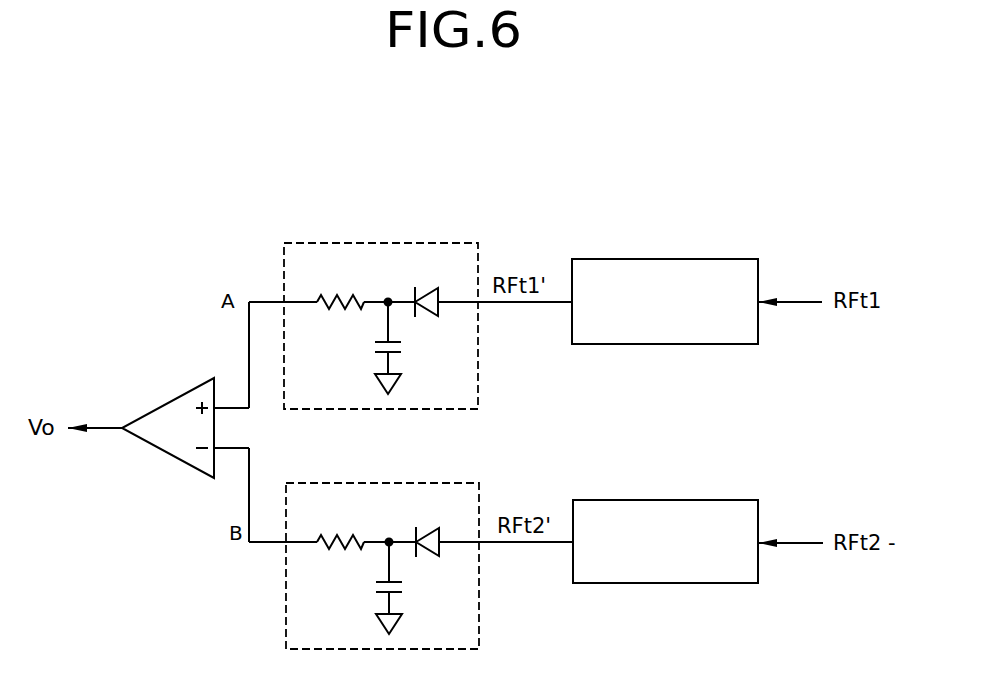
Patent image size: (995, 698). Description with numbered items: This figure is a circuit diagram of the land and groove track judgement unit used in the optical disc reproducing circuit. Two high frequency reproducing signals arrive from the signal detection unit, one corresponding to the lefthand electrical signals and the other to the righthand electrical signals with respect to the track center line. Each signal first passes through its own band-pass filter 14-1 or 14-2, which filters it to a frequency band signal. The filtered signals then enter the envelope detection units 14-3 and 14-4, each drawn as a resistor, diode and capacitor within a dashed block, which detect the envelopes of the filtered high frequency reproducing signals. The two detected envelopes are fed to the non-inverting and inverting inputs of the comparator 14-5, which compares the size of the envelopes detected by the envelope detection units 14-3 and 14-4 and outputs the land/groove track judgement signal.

The band-pass filter 14-1 is at (715, 259).
The band-pass filter 14-2 is at (715, 500).
The envelope detection unit 14-3 is at (432, 243).
The envelope detection unit 14-4 is at (435, 483).
The comparator 14-5 is at (158, 422).